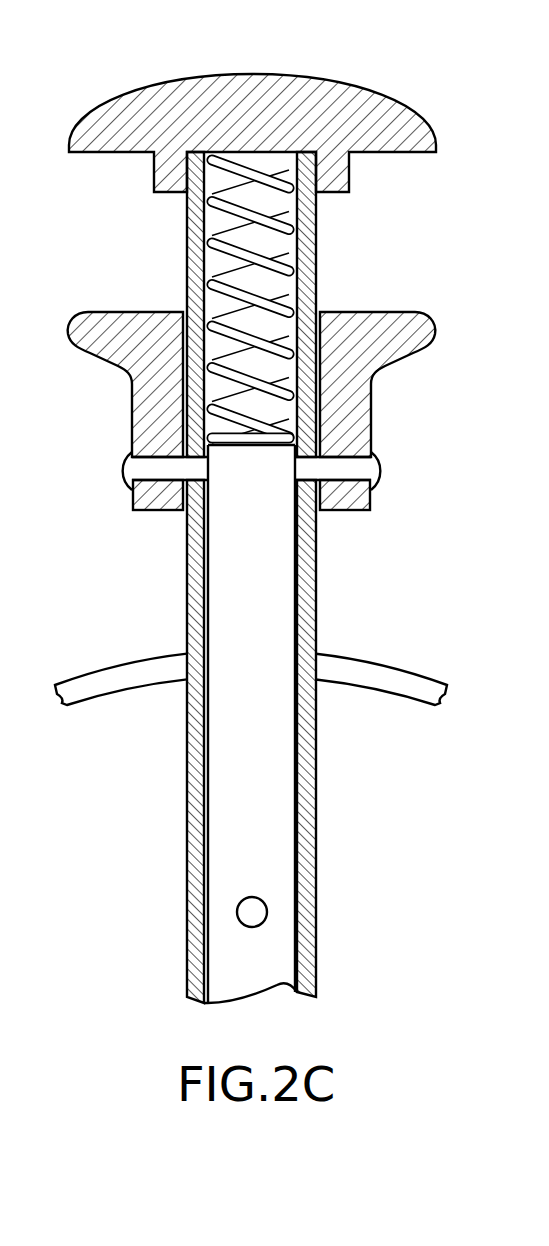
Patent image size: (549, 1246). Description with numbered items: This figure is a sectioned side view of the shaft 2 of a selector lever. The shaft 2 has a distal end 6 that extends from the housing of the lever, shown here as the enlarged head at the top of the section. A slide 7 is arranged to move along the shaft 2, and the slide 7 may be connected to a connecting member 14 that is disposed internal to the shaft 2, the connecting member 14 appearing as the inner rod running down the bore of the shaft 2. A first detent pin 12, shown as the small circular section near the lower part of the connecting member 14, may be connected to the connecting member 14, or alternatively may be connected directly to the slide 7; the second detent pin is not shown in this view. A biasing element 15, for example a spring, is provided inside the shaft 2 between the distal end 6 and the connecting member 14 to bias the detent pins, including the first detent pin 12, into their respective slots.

The distal end 6 is at (343, 80).
The shaft 2 is at (185, 237).
The biasing element 15 is at (288, 228).
The slide 7 is at (370, 398).
The connecting member 14 is at (275, 587).
The first detent pin 12 is at (267, 912).